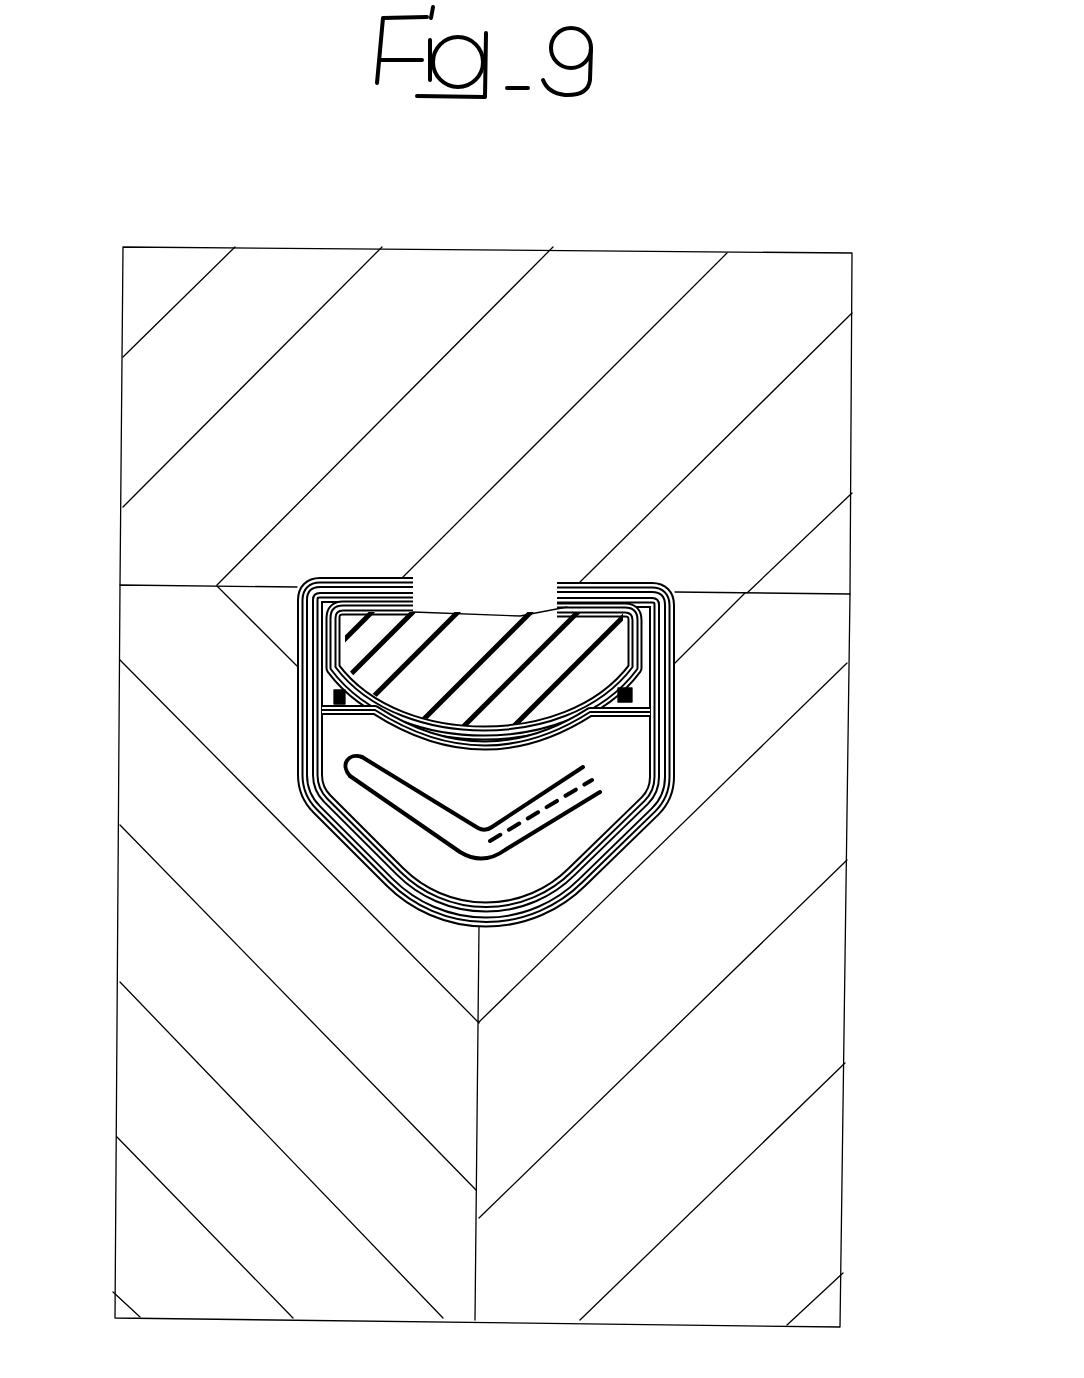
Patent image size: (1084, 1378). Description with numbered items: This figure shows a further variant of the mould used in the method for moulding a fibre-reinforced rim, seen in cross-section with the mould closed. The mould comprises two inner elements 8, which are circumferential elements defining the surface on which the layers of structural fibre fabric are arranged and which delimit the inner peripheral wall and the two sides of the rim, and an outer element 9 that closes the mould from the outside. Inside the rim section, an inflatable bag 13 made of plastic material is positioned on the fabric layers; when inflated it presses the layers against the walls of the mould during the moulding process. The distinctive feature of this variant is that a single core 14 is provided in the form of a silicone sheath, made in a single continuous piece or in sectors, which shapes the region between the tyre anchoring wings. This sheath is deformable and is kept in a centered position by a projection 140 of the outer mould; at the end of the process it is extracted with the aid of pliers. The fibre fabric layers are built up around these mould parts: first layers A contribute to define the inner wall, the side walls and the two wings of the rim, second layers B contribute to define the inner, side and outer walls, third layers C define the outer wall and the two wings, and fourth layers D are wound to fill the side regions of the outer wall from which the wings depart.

The inner elements 8 is at (132, 780).
The outer element 9 is at (825, 451).
The inflatable bag 13 is at (573, 812).
The single core 14 is at (515, 648).
The projection 140 is at (635, 595).
The first layers A is at (655, 660).
The second layers B is at (660, 730).
The third layers C is at (450, 725).
The fourth layers D is at (330, 692).